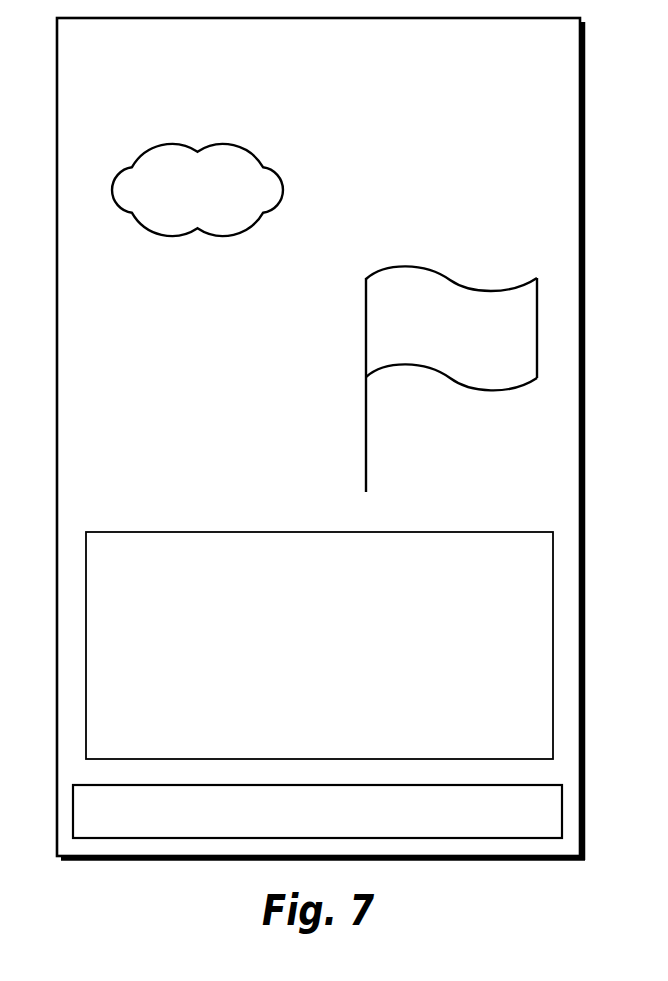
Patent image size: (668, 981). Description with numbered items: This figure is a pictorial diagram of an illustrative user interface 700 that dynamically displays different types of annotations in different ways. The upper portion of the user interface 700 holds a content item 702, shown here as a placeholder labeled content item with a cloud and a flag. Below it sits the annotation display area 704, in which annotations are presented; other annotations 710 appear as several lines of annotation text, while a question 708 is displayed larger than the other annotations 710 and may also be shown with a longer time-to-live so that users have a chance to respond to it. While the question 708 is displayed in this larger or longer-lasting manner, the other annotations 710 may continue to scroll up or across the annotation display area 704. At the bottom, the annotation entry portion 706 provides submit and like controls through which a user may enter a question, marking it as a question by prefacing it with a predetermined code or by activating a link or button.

The user interface 700 is at (148, 856).
The content item 702 is at (572, 248).
The annotation display area 704 is at (553, 640).
The annotation entry portion 706 is at (562, 813).
The question 708 is at (455, 678).
The other annotations 710 is at (455, 600).